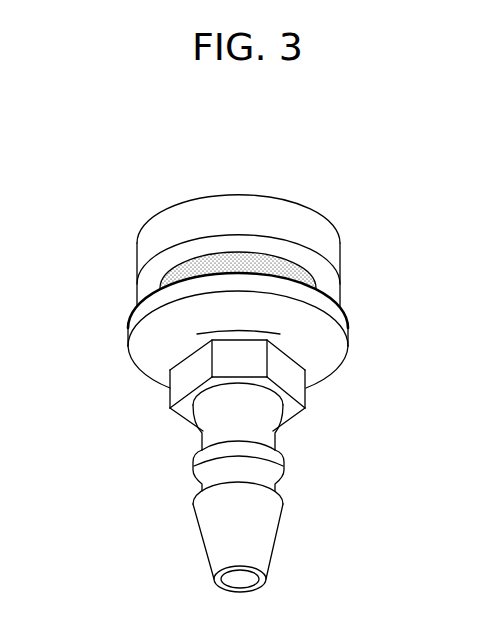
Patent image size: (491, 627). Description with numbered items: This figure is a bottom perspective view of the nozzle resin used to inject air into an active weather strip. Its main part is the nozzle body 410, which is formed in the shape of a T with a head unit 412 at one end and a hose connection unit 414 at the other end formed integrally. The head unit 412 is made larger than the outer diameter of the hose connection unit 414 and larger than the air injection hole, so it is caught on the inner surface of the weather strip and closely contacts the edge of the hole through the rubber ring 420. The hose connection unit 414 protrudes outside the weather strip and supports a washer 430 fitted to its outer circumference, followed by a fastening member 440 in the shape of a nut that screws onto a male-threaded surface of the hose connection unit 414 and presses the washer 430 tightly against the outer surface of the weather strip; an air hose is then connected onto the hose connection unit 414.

The nozzle body 410 is at (256, 368).
The head unit 412 is at (279, 222).
The hose connection unit 414 is at (263, 527).
The rubber ring 420 is at (213, 264).
The washer 430 is at (148, 346).
The fastening member 440 is at (190, 393).